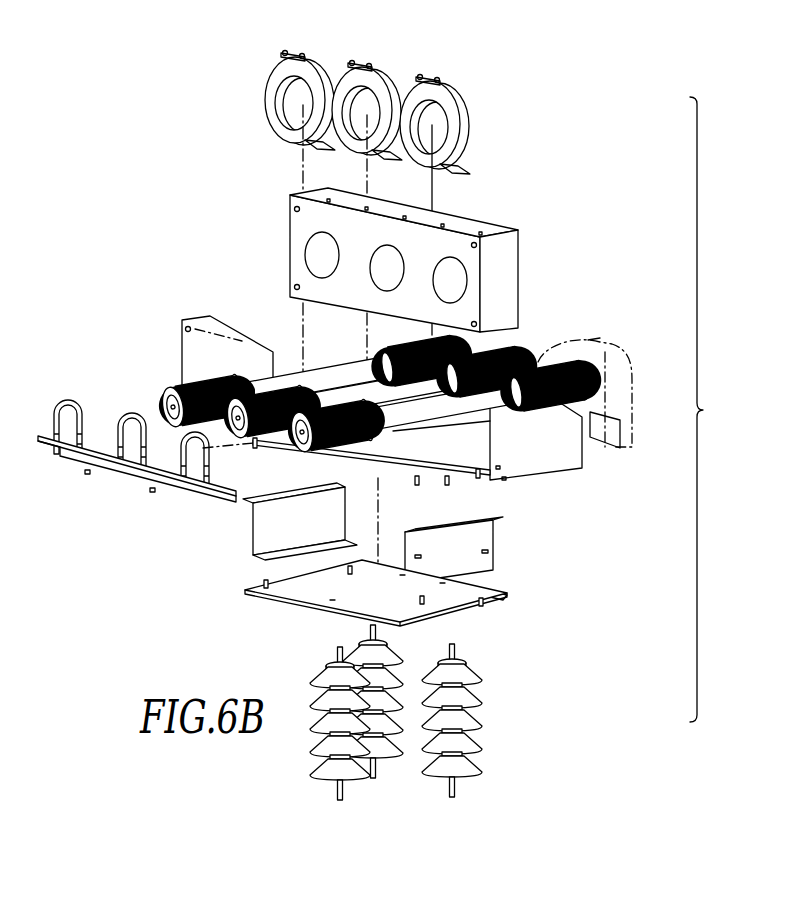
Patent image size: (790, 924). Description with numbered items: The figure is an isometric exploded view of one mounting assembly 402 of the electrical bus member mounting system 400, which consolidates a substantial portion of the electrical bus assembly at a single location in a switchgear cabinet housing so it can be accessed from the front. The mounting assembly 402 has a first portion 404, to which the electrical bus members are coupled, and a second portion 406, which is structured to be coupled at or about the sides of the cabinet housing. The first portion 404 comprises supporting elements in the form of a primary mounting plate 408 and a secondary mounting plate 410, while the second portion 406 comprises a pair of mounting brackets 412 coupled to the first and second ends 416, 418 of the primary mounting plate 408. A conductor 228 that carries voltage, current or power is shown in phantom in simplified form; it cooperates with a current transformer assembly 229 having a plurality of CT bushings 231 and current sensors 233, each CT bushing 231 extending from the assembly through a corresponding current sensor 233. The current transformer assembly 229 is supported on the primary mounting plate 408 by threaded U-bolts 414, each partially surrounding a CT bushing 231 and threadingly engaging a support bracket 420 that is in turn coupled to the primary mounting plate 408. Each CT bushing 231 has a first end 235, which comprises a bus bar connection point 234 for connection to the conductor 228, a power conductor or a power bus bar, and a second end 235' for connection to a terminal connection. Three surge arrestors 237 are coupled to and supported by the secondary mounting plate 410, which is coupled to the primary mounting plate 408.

The conductor 228 is at (618, 352).
The current transformer assembly 229 is at (250, 217).
The current transformer bushing 231 is at (342, 397).
The current sensor 233 is at (385, 78).
The bus bar connection point 234 is at (590, 342).
The first end 235 is at (486, 350).
The second end 235' is at (253, 377).
The surge arrestor 237 is at (425, 757).
The electrical bus member mounting system 400 is at (177, 642).
The mounting assembly 402 is at (740, 426).
The first portion 404 is at (305, 463).
The second portion 406 is at (537, 490).
The primary mounting plate 408 is at (386, 455).
The secondary mounting plate 410 is at (312, 590).
The mounting bracket 412 is at (218, 315).
The threaded U-bolt 414 is at (178, 432).
The first end 416 is at (445, 480).
The second end 418 is at (252, 449).
The support bracket 420 is at (165, 473).